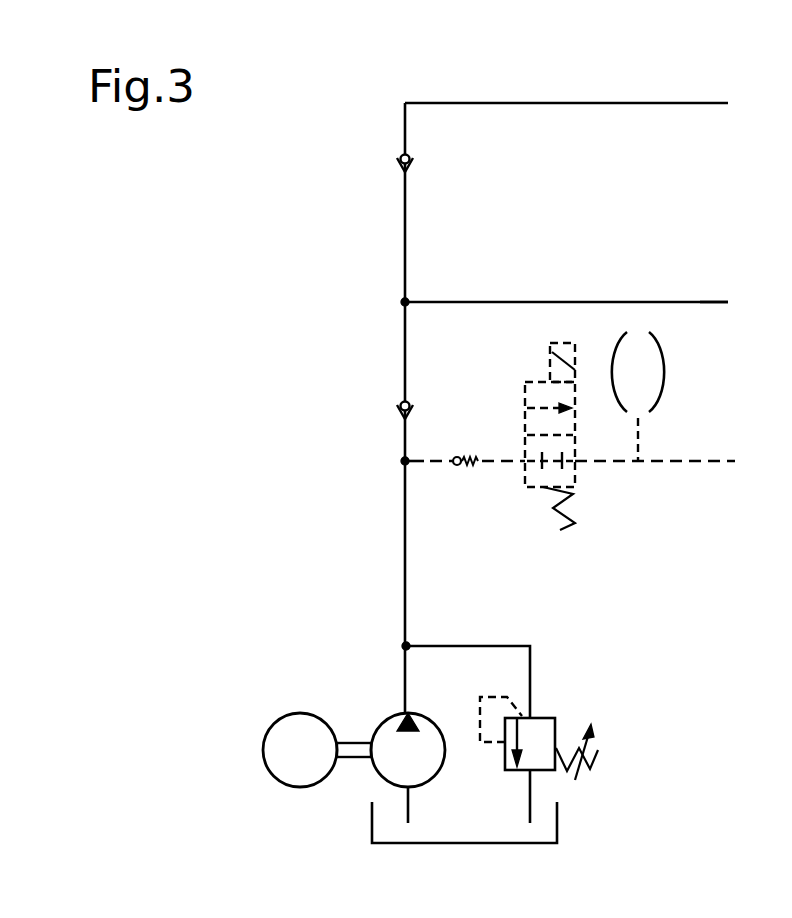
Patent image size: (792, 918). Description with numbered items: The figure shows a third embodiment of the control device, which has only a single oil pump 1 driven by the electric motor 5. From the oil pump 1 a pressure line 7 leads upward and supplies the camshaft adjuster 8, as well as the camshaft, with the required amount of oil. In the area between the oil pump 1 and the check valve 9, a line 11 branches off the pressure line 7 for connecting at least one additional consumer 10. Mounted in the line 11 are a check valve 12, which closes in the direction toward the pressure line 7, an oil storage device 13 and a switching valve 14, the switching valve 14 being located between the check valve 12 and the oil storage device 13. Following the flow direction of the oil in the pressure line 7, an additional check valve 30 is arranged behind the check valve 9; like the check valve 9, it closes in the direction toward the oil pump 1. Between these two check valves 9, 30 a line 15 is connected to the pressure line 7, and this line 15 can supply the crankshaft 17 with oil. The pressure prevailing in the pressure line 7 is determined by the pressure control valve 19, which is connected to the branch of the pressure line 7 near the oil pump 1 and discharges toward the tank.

The oil pump 1 is at (390, 730).
The electric motor 5 is at (270, 748).
The pressure line 7 is at (405, 527).
The camshaft adjuster 8 is at (581, 105).
The check valve 9 is at (399, 407).
The additional consumer 10 is at (598, 448).
The line 11 is at (423, 461).
The check valve 12 is at (456, 467).
The oil storage device 13 is at (651, 383).
The switching valve 14 is at (553, 483).
The line 15 is at (524, 302).
The crankshaft 17 is at (732, 297).
The pressure control valve 19 is at (540, 733).
The additional check valve 30 is at (399, 159).